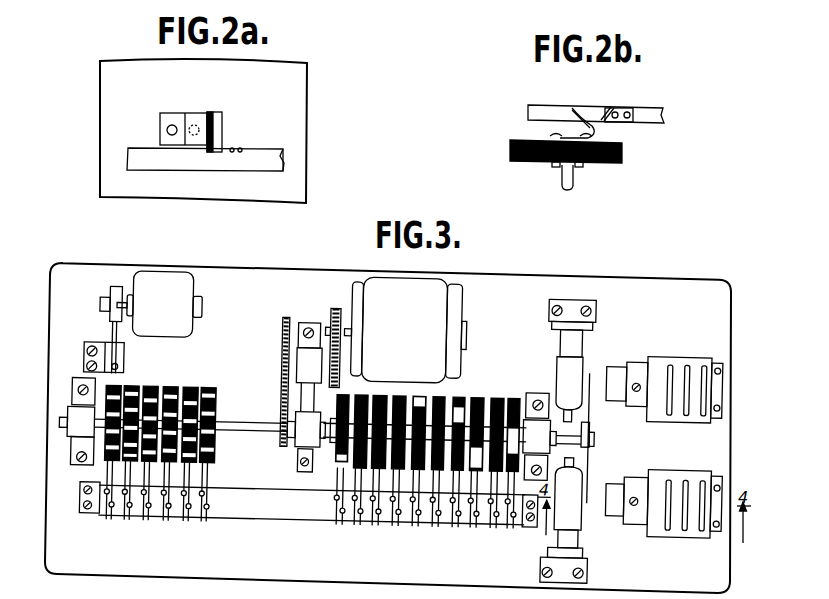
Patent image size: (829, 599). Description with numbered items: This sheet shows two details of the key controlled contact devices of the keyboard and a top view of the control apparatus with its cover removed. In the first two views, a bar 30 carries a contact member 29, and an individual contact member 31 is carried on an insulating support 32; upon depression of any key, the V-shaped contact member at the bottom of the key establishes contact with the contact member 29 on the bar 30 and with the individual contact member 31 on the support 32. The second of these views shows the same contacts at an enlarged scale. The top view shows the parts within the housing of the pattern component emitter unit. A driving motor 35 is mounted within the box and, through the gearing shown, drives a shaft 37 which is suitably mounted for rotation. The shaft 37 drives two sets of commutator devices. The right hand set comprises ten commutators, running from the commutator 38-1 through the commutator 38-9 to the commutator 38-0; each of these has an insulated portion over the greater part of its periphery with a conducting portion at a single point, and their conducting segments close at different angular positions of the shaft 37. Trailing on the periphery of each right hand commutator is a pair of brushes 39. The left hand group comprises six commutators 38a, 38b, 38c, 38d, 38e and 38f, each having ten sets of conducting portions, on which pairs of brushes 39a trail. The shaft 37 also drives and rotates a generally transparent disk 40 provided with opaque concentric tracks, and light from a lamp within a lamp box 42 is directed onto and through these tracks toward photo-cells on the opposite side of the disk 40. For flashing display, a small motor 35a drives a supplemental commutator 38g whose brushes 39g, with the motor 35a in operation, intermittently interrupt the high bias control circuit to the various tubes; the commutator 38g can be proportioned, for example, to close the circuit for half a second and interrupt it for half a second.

In FIG. 2a, the contact member 29 is at (224, 127).
In FIG. 2b, the contact member 29 is at (600, 118).
In FIG. 2a, the bar 30 is at (270, 167).
In FIG. 2b, the bar 30 is at (645, 117).
In FIG. 2a, the individual contact member 31 is at (190, 118).
In FIG. 2b, the individual contact member 31 is at (572, 108).
In FIG. 2a, the insulating support 32 is at (105, 155).
In FIG. 2b, the insulating support 32 is at (523, 162).
In FIG. 3, the driving motor 35 is at (438, 299).
In FIG. 3, the small motor 35a is at (178, 282).
In FIG. 3, the shaft 37 is at (246, 423).
In FIG. 3, the commutator 38a is at (122, 383).
In FIG. 3, the commutator 38b is at (134, 384).
In FIG. 3, the commutator 38c is at (153, 385).
In FIG. 3, the commutator 38d is at (178, 384).
In FIG. 3, the commutator 38e is at (194, 384).
In FIG. 3, the commutator 38f is at (213, 386).
In FIG. 3, the supplemental commutator 38g is at (118, 289).
In FIG. 3, the commutator 38-1 is at (353, 388).
In FIG. 3, the commutator 38-9 is at (499, 388).
In FIG. 3, the commutator 38-0 is at (516, 388).
In FIG. 3, the brushes 39 is at (416, 518).
In FIG. 3, the brushes 39a is at (119, 513).
In FIG. 3, the brushes 39g is at (114, 325).
In FIG. 3, the disk 40 is at (594, 452).
In FIG. 3, the lamp box 42 is at (664, 514).